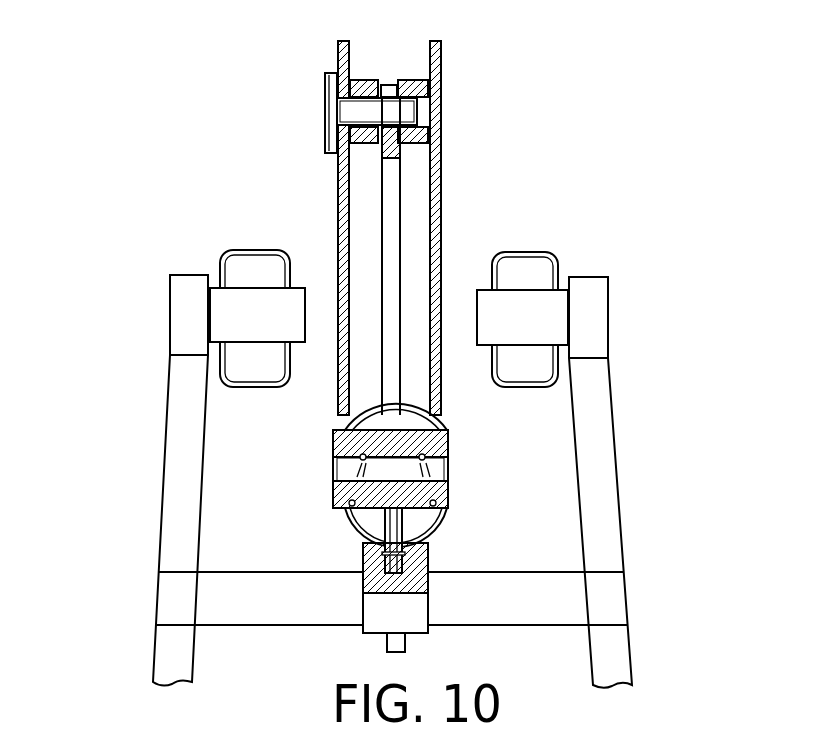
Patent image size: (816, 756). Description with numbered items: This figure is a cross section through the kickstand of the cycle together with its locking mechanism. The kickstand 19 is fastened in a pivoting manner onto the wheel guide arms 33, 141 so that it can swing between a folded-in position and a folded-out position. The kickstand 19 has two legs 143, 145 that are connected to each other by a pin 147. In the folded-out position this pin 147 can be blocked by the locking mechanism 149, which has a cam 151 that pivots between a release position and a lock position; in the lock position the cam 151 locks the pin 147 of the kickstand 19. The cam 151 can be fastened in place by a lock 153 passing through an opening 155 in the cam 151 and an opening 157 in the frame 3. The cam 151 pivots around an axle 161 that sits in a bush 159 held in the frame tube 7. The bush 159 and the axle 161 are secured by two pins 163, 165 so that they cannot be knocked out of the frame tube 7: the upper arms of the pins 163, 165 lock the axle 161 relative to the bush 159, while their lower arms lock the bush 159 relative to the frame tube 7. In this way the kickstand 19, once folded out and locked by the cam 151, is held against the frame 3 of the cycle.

The frame 3 is at (338, 227).
The frame tube 7 is at (430, 533).
The kickstand 19 is at (154, 618).
The wheel guide arm 33 is at (540, 255).
The wheel guide arm 141 is at (240, 253).
The leg 143 is at (175, 545).
The leg 145 is at (603, 548).
The pin 147 is at (470, 614).
The locking mechanism 149 is at (410, 151).
The cam 151 is at (390, 187).
The lock 153 is at (340, 120).
The opening 155 is at (388, 92).
The opening 157 is at (337, 93).
The bush 159 is at (437, 443).
The axle 161 is at (440, 465).
The pin 163 is at (437, 508).
The pin 165 is at (352, 503).